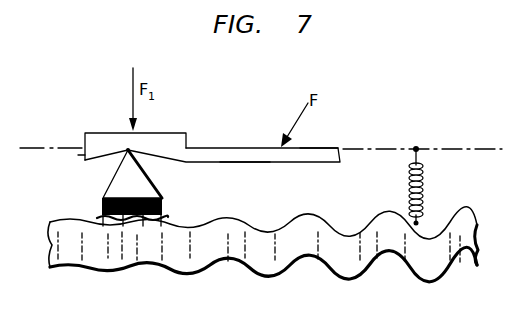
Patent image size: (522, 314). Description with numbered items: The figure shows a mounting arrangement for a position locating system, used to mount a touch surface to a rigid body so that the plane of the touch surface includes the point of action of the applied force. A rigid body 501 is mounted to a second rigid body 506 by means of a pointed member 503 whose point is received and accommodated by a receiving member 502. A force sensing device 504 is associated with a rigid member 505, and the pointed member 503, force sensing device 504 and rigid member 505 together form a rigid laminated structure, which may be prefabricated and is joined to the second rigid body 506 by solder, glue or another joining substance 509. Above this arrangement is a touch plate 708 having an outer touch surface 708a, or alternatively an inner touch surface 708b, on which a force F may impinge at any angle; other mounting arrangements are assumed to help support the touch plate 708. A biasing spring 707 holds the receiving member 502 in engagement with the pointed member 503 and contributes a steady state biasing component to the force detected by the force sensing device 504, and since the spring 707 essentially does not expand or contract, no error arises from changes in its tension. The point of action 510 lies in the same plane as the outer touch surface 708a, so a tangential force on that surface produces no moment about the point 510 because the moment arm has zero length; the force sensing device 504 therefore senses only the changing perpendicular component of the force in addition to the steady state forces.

The rigid body 501 is at (168, 142).
The receiving member 502 is at (79, 155).
The pointed member 503 is at (118, 190).
The force sensing device 504 is at (160, 206).
The rigid member 505 is at (165, 213).
The second rigid body 506 is at (332, 238).
The joining substance 509 is at (98, 218).
The point of action 510 is at (129, 145).
The biasing spring 707 is at (422, 174).
The touch plate 708 is at (217, 150).
The outer touch surface 708a is at (313, 148).
The inner touch surface 708b is at (243, 162).